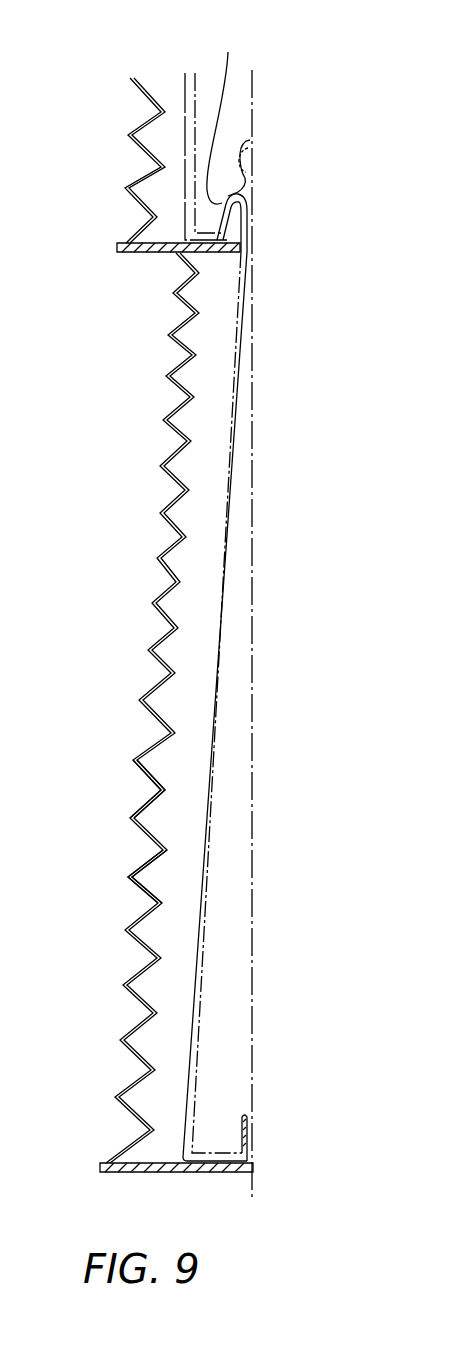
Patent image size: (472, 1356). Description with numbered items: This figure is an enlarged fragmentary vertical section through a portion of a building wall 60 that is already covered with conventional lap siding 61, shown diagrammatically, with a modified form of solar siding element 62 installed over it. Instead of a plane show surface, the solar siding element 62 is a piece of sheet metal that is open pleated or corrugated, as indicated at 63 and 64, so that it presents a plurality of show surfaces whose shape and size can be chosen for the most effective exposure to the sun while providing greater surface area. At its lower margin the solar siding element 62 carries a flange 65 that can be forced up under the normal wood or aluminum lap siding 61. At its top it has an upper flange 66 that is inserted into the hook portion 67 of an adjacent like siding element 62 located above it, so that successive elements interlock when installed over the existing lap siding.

The wall 60 is at (247, 133).
The conventional lap siding 61 is at (217, 663).
The solar siding element 62 is at (150, 740).
The pleat 63 is at (137, 877).
The corrugation 64 is at (150, 780).
The flange 65 is at (253, 1137).
The upper flange 66 is at (240, 240).
The hook portion 67 is at (230, 109).